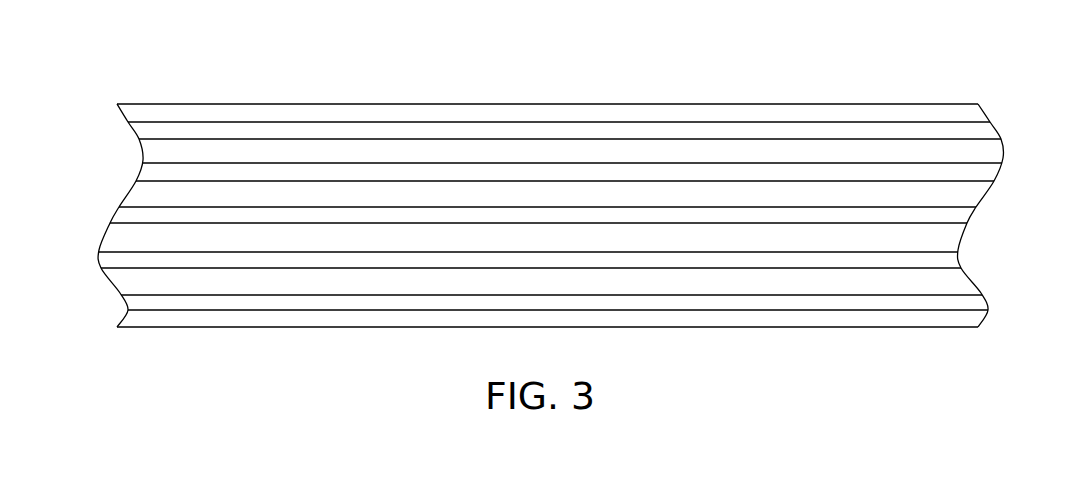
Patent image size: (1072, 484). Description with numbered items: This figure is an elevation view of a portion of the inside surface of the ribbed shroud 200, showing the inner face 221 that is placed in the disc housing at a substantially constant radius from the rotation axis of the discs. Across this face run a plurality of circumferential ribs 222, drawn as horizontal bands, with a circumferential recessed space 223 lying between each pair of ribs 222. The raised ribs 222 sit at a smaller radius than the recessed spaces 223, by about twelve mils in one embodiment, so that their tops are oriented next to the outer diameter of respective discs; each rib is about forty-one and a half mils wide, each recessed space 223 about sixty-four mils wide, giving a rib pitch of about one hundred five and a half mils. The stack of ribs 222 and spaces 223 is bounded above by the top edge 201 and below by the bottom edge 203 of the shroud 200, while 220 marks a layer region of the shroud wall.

The ribbed shroud 200 is at (908, 71).
The top edge 201 is at (546, 103).
The bottom surface 203 is at (546, 328).
The dielectric layer 220 is at (236, 170).
The inner face 221 is at (170, 320).
The circumferential ribs 222 is at (129, 127).
The circumferential recessed spaces 223 is at (1004, 150).